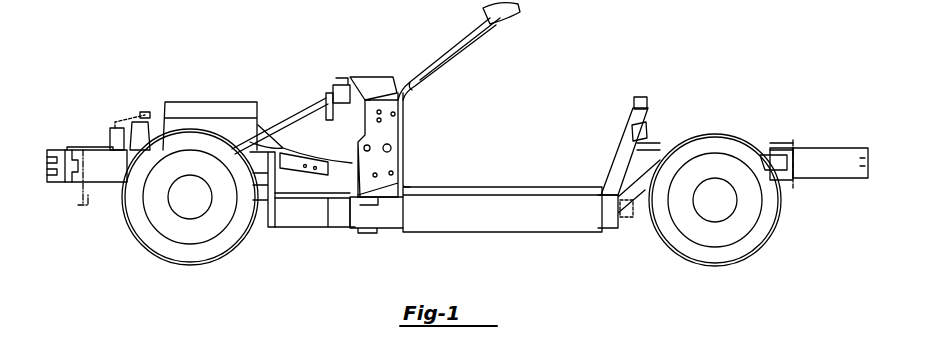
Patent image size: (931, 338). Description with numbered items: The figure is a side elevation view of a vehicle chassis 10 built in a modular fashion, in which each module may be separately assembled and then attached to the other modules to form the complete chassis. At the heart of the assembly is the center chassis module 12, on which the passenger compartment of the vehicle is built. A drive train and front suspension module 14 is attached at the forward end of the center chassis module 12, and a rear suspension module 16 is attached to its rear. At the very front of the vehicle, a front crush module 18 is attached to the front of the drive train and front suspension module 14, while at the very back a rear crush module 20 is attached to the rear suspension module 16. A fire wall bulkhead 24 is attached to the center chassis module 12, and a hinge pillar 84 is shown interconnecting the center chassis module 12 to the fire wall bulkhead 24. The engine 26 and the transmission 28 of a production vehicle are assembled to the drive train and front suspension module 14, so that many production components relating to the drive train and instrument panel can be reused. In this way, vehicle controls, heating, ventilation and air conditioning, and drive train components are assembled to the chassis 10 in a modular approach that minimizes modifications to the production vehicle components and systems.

The chassis 10 is at (306, 244).
The center chassis module 12 is at (372, 232).
The drive train and front suspension module 14 is at (258, 165).
The rear suspension module 16 is at (640, 197).
The front crush module 18 is at (97, 158).
The rear crush module 20 is at (833, 162).
The fire wall bulkhead 24 is at (357, 140).
The engine 26 is at (229, 107).
The transmission 28 is at (285, 130).
The hinge pillar 84 is at (392, 158).